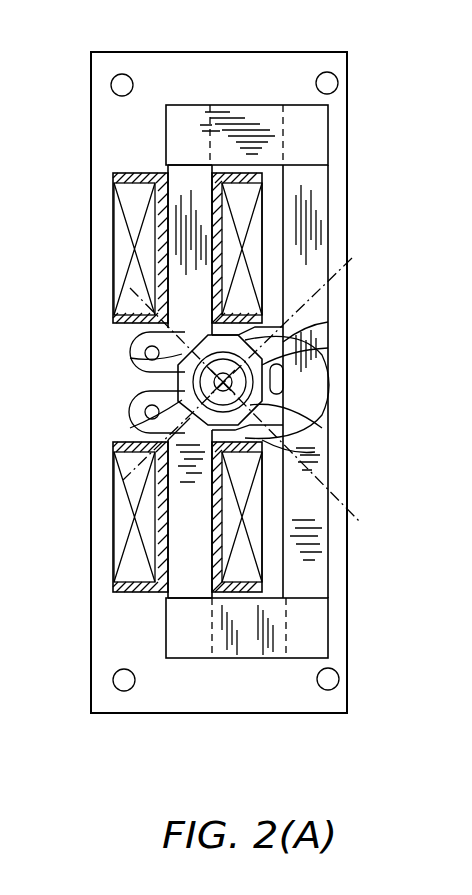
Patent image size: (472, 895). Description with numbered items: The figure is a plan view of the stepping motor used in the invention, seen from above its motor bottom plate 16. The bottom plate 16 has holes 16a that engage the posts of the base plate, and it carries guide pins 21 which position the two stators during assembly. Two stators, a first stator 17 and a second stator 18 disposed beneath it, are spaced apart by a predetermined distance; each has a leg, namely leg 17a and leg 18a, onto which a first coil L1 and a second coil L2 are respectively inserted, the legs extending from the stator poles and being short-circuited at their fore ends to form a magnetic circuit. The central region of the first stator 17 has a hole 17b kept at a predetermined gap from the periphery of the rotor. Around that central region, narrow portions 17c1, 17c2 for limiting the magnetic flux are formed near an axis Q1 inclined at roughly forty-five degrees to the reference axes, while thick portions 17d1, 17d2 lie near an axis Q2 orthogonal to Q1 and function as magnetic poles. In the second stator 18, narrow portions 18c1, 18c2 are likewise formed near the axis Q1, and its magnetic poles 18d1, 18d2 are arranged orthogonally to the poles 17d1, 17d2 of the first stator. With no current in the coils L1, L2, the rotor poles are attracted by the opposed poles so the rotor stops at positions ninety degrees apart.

The motor bottom plate 16 is at (215, 55).
The holes 16a is at (335, 80).
The first stator 17 is at (318, 197).
The leg 17a is at (177, 173).
The hole 17b is at (300, 388).
The narrow portion 17c1 is at (305, 352).
The narrow portion 17c2 is at (150, 396).
The thick portion 17d1 is at (300, 448).
The thick portion 17d2 is at (180, 333).
The second stator 18 is at (320, 580).
The leg 18a is at (180, 585).
The narrow portion 18c1 is at (175, 425).
The narrow portion 18c2 is at (300, 326).
The magnetic pole 18d1 is at (140, 368).
The magnetic pole 18d2 is at (300, 420).
The guide pins 21 is at (148, 413).
The first coil L1 is at (118, 245).
The second coil L2 is at (118, 530).
The axis Q1 is at (255, 361).
The axis Q2 is at (262, 416).